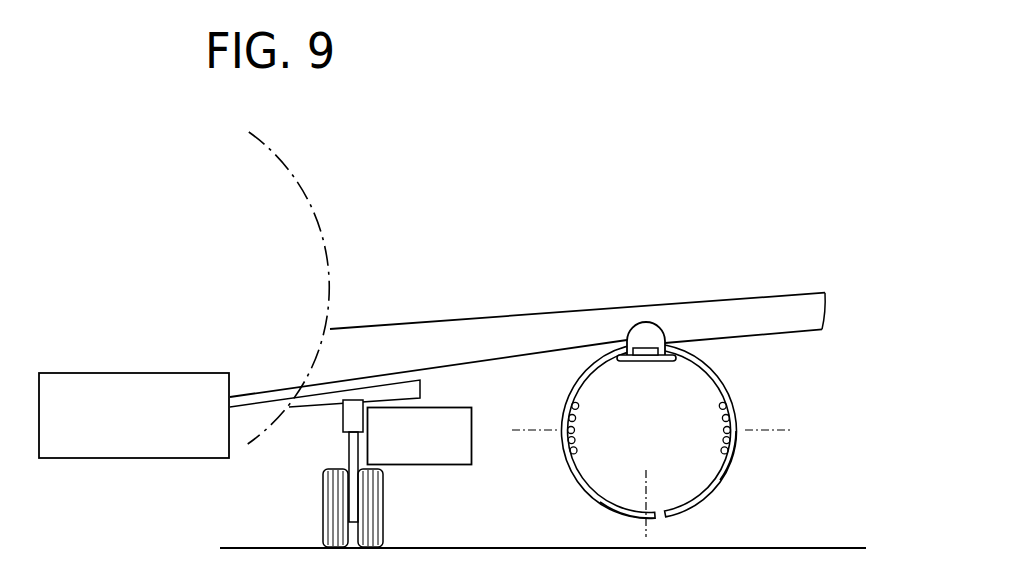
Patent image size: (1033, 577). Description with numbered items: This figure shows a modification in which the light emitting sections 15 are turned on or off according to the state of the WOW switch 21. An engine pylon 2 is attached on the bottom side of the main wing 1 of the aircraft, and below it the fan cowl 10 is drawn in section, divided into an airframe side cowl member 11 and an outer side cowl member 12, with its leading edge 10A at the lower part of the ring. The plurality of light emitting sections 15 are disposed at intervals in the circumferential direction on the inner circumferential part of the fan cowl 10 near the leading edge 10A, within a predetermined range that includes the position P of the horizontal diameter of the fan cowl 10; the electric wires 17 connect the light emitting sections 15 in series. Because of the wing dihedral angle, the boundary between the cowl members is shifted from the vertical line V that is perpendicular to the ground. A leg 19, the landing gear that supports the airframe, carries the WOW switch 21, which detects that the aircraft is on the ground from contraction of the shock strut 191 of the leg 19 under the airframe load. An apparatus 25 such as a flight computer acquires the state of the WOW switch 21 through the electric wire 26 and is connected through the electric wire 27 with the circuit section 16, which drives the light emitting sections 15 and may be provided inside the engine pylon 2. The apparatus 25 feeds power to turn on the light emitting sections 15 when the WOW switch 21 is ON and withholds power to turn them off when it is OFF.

The main wing 1 is at (752, 296).
The engine pylon 2 is at (646, 323).
The fan cowl 10 is at (730, 487).
The leading edge 10A is at (593, 504).
The airframe side cowl member 11 is at (648, 431).
The outer side cowl member 12 is at (728, 383).
The light emitting sections 15 is at (577, 420).
The circuit section 16 is at (655, 347).
The electric wires 17 is at (618, 362).
The leg 19 is at (306, 473).
The shock strut 191 is at (343, 424).
The WOW switch 21 is at (472, 452).
The apparatus 25 is at (163, 373).
The electric wire 26 is at (265, 410).
The electric wire 27 is at (491, 339).
The position of a diameter of the fan cowl in a horizontal direction P is at (660, 430).
The vertical line V is at (645, 491).